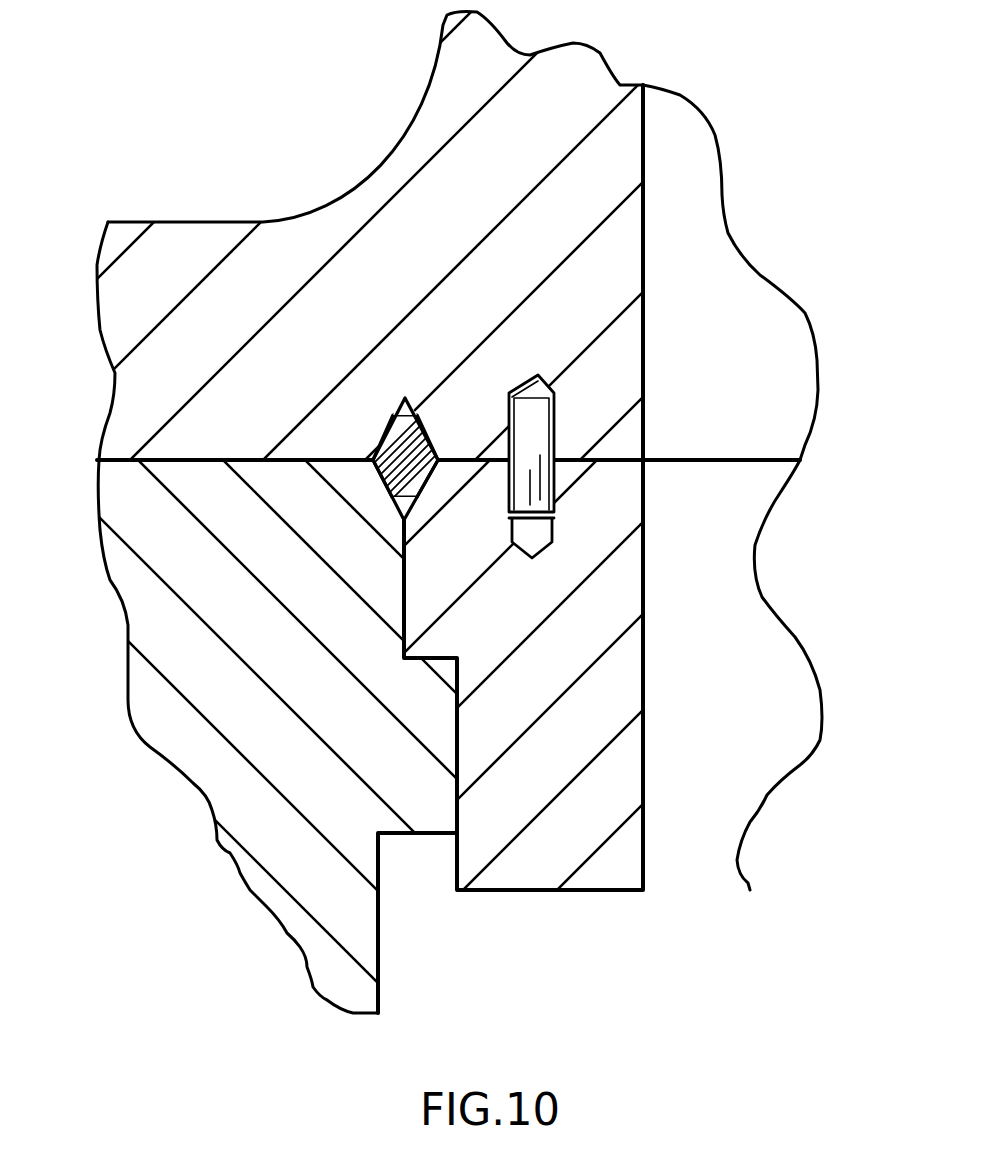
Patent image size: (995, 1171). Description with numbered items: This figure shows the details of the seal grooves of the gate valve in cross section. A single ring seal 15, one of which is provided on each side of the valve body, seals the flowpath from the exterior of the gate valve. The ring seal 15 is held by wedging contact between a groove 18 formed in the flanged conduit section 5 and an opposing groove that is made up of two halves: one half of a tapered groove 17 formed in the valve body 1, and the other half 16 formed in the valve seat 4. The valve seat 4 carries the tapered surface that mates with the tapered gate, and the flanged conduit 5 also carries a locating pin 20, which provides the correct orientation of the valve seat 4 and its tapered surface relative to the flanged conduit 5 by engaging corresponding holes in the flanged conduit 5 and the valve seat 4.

The valve body 1 is at (188, 669).
The valve seat 4 is at (650, 670).
The flanged conduit 5 is at (647, 265).
The ring seal 15 is at (385, 427).
The other half of tapered groove 16 is at (423, 487).
The tapered groove half 17 is at (385, 493).
The groove 18 is at (409, 400).
The locating pin 20 is at (549, 455).